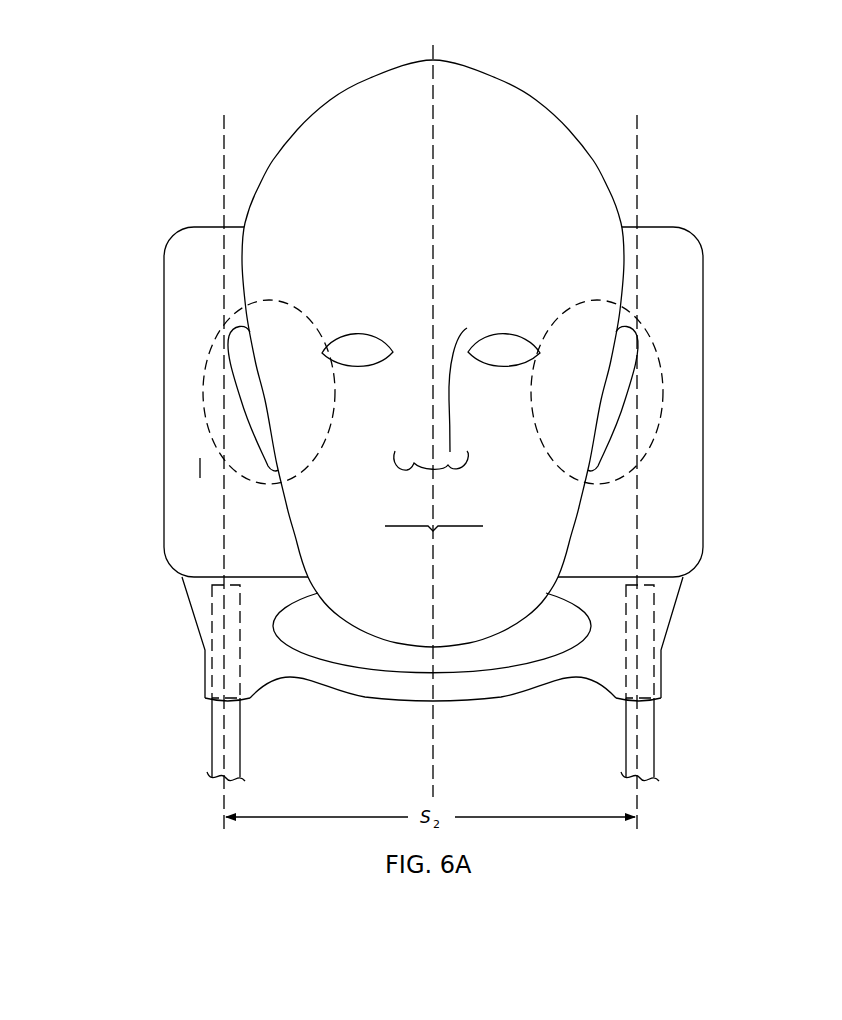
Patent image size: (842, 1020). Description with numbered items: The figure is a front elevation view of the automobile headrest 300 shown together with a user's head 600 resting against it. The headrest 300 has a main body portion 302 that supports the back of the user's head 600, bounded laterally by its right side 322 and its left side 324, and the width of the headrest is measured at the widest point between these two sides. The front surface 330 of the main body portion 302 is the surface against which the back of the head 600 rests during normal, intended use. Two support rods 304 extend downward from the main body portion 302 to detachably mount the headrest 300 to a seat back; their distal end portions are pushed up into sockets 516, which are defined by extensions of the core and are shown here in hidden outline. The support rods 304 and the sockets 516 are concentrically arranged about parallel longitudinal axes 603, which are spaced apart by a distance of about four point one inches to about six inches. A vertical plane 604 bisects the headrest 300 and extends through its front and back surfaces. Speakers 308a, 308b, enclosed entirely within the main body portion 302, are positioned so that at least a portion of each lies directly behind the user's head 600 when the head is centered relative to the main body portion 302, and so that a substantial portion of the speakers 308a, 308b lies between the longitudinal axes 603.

The user's head 600 is at (557, 106).
The longitudinal axes 603 is at (224, 125).
The vertical plane 604 is at (435, 760).
The automobile headrest 300 is at (724, 236).
The main body portion 302 is at (450, 387).
The right side of the main body portion 322 is at (193, 358).
The left side of the main body portion 324 is at (706, 410).
The front surface of the main body portion 330 is at (200, 467).
The left speaker 308a is at (665, 389).
The right speaker 308b is at (216, 340).
The support rods 304 is at (211, 738).
The sockets 516 is at (212, 612).